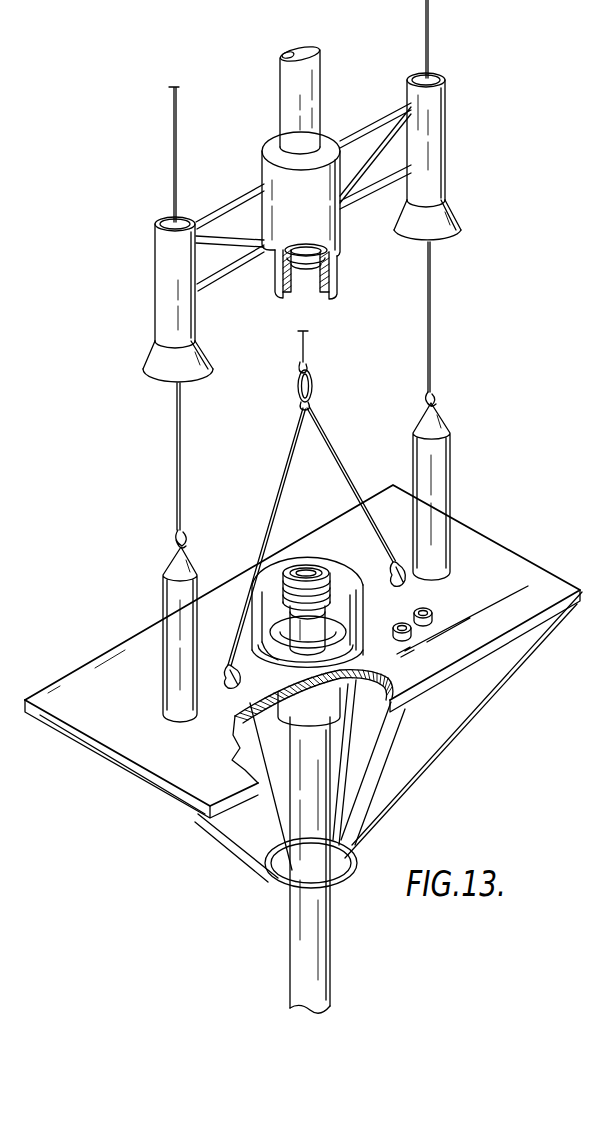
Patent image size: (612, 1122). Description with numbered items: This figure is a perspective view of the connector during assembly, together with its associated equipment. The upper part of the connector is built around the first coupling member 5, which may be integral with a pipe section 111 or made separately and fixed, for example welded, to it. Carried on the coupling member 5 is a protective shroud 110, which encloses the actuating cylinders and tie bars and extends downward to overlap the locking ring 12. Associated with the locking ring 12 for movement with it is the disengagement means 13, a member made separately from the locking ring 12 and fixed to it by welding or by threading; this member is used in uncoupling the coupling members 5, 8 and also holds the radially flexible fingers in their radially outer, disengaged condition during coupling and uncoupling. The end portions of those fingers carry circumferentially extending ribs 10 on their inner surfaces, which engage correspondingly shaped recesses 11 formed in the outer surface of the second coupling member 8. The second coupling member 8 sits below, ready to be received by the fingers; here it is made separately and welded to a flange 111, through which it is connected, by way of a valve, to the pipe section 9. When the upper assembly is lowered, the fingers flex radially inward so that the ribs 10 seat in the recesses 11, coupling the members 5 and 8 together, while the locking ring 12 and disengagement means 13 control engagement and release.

The first coupling member 5 is at (308, 244).
The second coupling member 8 is at (320, 626).
The pipe section 9 is at (326, 965).
The ribs 10 is at (286, 293).
The recesses 11 is at (305, 597).
The locking ring 12 is at (270, 286).
The disengagement means 13 is at (326, 301).
The protective shroud 110 is at (338, 245).
The pipe section / flange 111 is at (314, 88).